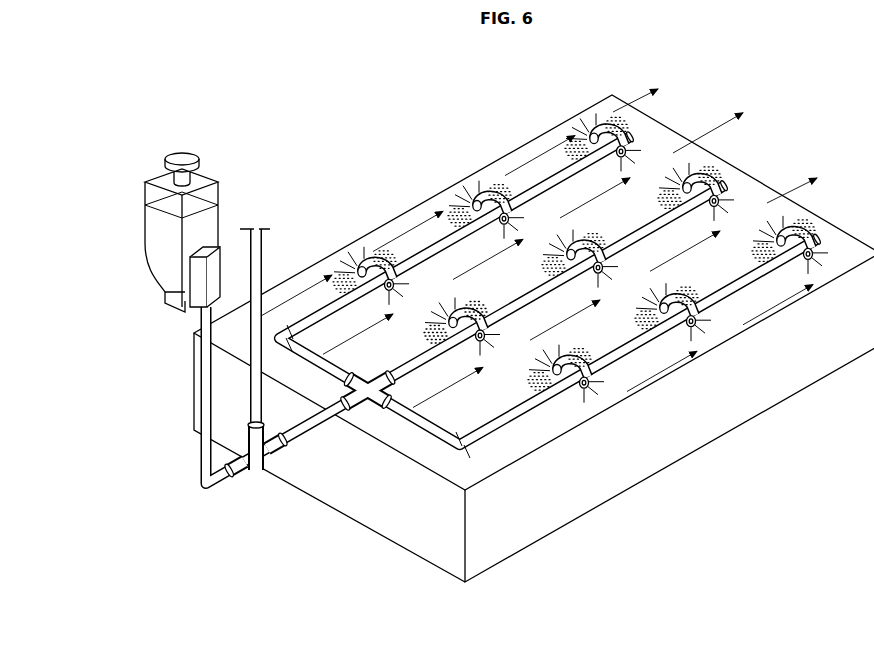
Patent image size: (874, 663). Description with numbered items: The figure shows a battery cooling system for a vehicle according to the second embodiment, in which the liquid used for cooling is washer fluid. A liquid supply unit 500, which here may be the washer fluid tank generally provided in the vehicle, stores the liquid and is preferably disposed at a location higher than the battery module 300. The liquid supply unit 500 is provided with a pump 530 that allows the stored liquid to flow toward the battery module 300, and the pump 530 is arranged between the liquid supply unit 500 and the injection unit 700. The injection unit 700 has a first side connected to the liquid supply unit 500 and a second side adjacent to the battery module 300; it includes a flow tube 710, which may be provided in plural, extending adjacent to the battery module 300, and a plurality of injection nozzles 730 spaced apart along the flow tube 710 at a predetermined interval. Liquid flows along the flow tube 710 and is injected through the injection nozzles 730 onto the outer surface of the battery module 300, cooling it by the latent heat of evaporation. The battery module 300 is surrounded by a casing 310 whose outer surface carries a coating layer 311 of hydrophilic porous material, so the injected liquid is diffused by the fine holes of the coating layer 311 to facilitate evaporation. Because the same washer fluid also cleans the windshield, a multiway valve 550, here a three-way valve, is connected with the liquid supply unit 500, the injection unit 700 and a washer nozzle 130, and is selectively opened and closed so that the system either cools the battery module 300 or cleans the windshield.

The washer nozzle 130 is at (262, 243).
The battery module 300 is at (534, 335).
The casing 310 is at (602, 488).
The coating layer 311 is at (750, 190).
The liquid supply unit 500 is at (160, 227).
The pump 530 is at (192, 294).
The multiway valve 550 is at (251, 468).
The injection unit 700 is at (517, 276).
The flow tube 710 is at (532, 188).
The injection nozzles 730 is at (488, 194).